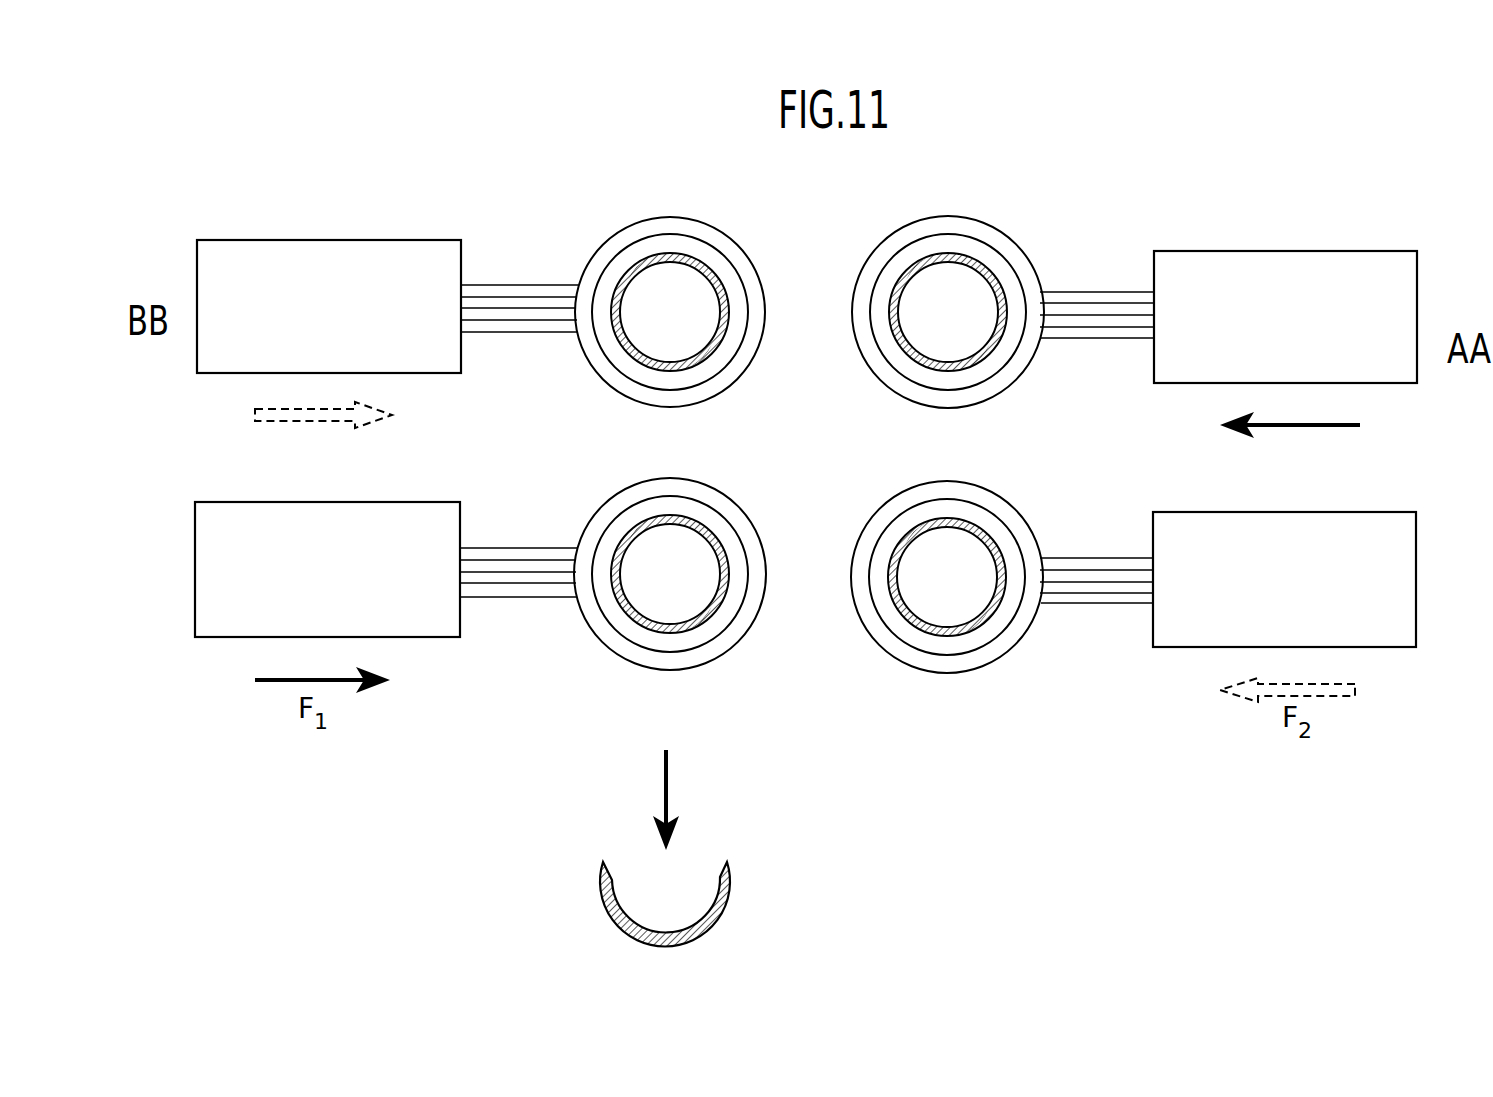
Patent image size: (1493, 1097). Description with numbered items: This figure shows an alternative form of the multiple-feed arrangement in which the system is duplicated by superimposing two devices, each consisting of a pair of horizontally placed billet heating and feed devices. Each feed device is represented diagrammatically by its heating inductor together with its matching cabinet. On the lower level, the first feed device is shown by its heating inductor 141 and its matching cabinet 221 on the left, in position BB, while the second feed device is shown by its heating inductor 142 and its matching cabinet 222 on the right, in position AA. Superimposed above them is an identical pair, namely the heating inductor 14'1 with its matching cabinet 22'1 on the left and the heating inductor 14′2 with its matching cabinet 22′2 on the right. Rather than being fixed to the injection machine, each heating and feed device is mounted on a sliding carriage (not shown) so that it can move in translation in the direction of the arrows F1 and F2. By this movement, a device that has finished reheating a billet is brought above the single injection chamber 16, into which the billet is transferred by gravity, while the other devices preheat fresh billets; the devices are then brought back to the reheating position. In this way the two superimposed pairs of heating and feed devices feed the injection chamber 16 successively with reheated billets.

The matching cabinet 22'1 is at (387, 276).
The heating inductor 14'1 is at (690, 293).
The heating inductor 14′2 is at (1018, 245).
The matching cabinet 22′2 is at (1347, 251).
The matching cabinet 221 is at (222, 637).
The heating inductor 141 is at (617, 657).
The heating inductor 142 is at (992, 662).
The matching cabinet 222 is at (1392, 647).
The injection chamber 16 is at (730, 877).